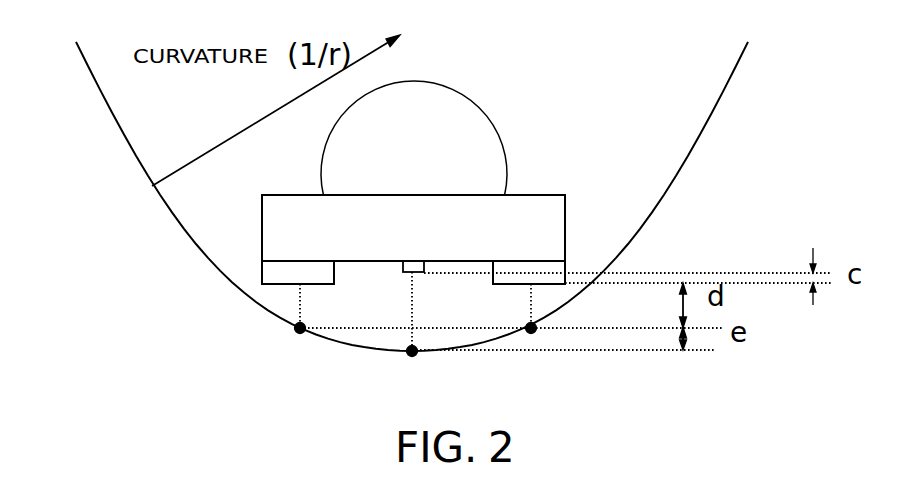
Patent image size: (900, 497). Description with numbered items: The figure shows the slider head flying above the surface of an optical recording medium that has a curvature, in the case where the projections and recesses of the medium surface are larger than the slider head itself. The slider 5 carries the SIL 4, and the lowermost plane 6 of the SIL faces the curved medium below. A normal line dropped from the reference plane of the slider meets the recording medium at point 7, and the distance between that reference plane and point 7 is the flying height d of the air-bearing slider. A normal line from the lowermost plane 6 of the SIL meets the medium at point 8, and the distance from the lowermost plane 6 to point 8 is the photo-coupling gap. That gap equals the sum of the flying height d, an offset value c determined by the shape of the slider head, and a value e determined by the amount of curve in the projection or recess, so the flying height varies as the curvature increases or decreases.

The SIL 4 is at (478, 135).
The slider 5 is at (283, 223).
The lowermost plane of SIL 6 is at (420, 277).
The point of intersection of a normal line from a reference plane of the slider to t 7 is at (412, 329).
The point of intersection of a normal line from the lowermost plane of SIL to the re 8 is at (413, 330).